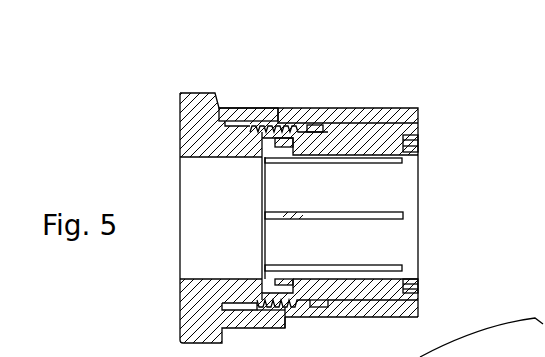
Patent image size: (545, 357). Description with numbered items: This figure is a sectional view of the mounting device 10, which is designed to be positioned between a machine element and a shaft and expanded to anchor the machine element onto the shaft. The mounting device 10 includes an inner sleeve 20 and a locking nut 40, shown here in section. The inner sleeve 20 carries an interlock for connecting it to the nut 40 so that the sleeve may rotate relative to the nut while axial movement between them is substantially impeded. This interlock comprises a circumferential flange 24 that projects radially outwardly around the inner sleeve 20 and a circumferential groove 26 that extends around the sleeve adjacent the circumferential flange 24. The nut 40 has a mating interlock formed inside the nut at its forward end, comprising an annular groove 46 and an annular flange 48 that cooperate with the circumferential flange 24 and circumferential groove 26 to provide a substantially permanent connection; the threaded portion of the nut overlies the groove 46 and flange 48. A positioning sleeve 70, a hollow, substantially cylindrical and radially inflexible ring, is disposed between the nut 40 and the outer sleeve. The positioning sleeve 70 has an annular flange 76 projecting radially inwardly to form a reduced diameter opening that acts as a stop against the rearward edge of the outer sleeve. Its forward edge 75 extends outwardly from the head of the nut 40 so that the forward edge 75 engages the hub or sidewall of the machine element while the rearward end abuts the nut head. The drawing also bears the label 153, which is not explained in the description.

The mounting device 10 is at (413, 84).
The inner sleeve 20 is at (410, 240).
The circumferential flange 24 is at (274, 290).
The circumferential groove 26 is at (290, 283).
The locking nut 40 is at (179, 140).
The annular groove 46 is at (263, 172).
The annular flange 48 is at (274, 145).
The positioning sleeve 70 is at (256, 106).
The forward edge 75 is at (280, 115).
The annular flange 76 is at (226, 120).
The retaining sleeve 153 is at (343, 317).